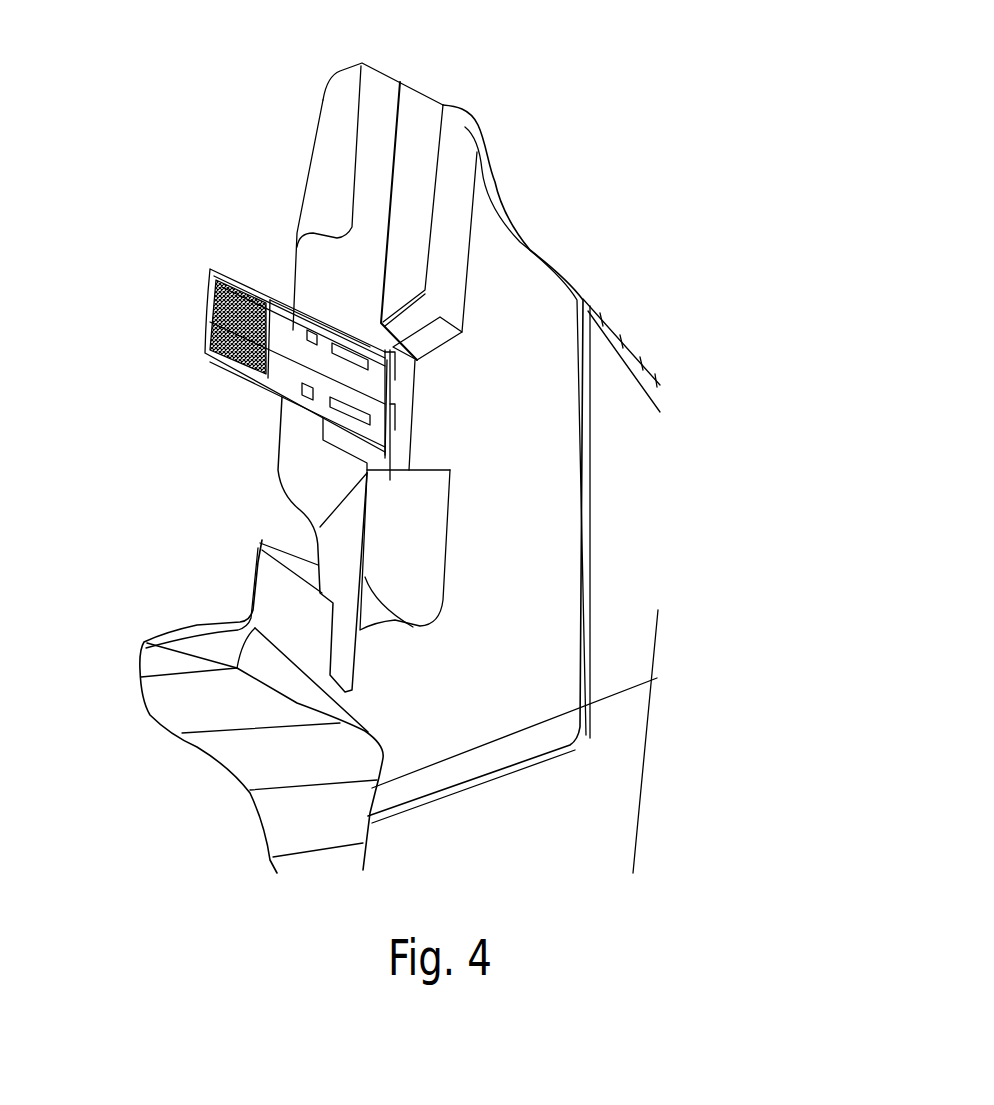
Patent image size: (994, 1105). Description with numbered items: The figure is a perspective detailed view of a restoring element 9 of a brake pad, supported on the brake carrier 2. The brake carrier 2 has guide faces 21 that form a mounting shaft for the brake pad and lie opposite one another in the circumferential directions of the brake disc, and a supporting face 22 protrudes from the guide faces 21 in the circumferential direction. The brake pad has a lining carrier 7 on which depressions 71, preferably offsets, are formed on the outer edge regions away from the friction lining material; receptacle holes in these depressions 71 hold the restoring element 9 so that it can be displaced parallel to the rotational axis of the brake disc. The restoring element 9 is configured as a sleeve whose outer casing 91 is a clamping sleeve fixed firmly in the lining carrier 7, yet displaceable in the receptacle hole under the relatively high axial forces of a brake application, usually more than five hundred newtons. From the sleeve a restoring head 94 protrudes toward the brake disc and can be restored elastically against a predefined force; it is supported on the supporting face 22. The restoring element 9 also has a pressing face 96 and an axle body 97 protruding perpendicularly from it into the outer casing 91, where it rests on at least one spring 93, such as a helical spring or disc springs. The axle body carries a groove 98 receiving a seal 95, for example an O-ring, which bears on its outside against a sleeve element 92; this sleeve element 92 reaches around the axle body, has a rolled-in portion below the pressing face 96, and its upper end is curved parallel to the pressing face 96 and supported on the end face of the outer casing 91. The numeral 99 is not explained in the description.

The brake carrier 2 is at (500, 268).
The guide faces 21 is at (447, 165).
The supporting face 22 is at (413, 447).
The lining carrier 7 is at (410, 133).
The depressions 71 is at (290, 415).
The restoring element 9 is at (183, 370).
The outer casing 91 is at (230, 267).
The sleeve element 92 is at (260, 387).
The spring 93 is at (203, 313).
The restoring head 94 is at (278, 305).
The seal 95 is at (282, 400).
The pressing face 96 is at (393, 378).
The axle body 97 is at (395, 405).
The groove 98 is at (280, 312).
The support block 99 is at (390, 463).